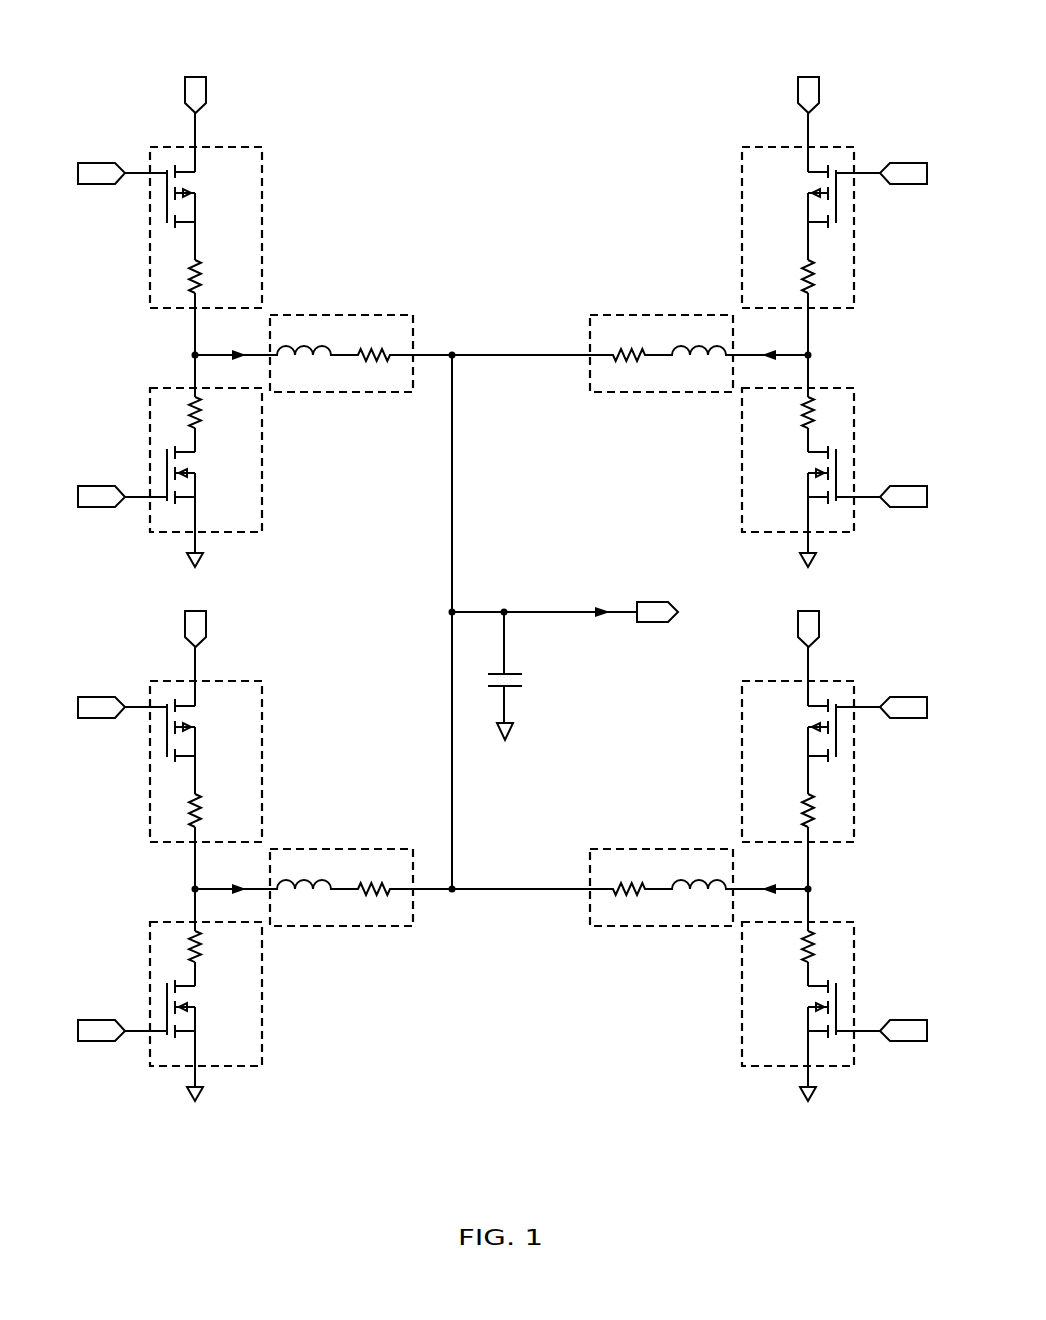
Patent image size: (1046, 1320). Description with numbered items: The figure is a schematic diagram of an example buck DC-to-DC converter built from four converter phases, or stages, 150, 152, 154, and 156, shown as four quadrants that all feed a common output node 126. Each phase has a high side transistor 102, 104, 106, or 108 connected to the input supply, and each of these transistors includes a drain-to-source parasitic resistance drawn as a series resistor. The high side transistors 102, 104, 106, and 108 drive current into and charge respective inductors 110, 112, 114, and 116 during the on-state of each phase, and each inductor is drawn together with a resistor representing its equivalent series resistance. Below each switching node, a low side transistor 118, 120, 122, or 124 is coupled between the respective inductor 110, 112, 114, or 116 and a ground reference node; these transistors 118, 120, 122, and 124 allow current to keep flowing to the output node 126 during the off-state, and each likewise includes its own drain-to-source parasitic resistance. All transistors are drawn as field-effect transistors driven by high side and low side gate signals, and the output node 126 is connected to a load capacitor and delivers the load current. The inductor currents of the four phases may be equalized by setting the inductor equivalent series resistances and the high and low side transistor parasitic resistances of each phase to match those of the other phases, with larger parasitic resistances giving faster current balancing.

The transistor 102 is at (237, 147).
The transistor 104 is at (237, 681).
The transistor 106 is at (768, 147).
The transistor 108 is at (768, 681).
The inductor 110 is at (317, 315).
The inductor 112 is at (317, 849).
The inductor 114 is at (687, 315).
The inductor 116 is at (687, 849).
The transistor 118 is at (230, 533).
The transistor 120 is at (230, 1067).
The transistor 122 is at (773, 532).
The transistor 124 is at (773, 1066).
The output node 126 is at (450, 614).
The converter phase 150 is at (133, 33).
The converter phase 152 is at (272, 1140).
The converter phase 154 is at (733, 31).
The converter phase 156 is at (745, 1141).